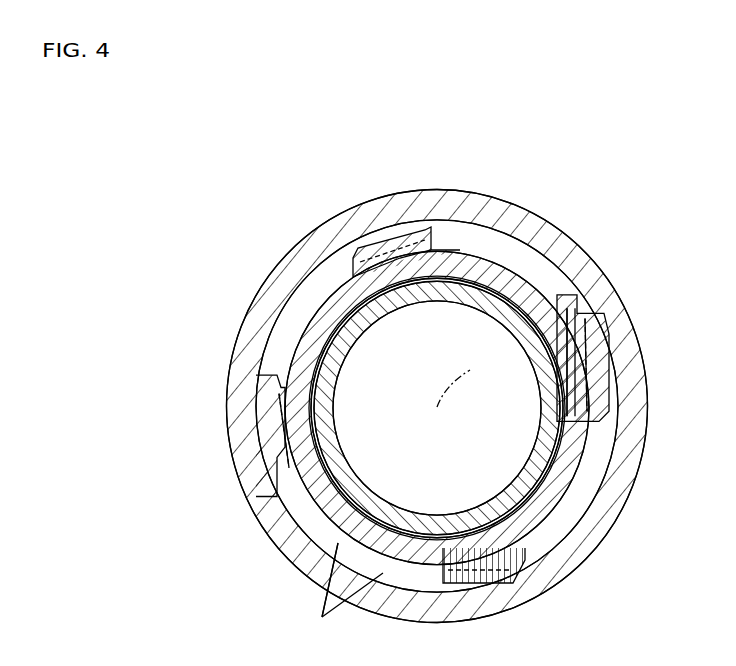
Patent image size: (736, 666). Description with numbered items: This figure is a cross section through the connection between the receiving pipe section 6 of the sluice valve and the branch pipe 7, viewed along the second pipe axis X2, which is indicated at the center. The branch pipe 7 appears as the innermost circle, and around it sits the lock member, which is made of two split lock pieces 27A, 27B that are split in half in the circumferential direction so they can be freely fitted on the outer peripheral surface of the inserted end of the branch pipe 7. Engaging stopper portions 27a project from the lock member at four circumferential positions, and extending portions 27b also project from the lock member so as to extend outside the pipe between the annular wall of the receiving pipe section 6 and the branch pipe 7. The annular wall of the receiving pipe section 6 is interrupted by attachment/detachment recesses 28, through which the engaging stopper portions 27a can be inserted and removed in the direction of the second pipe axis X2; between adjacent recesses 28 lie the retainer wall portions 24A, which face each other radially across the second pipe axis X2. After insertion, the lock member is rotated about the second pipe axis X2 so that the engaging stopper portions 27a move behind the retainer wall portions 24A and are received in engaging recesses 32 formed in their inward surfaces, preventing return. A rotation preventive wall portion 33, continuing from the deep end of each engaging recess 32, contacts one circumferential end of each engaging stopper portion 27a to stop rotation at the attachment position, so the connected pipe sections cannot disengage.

The receiving pipe section 6 is at (230, 362).
The branch pipe 7 is at (430, 515).
The retainer wall portions 24A is at (340, 260).
The engaging stopper portions 27a is at (373, 247).
The extending portions 27b is at (285, 357).
The split lock piece 27A is at (563, 503).
The split lock piece 27B is at (343, 543).
The attachment/detachment recesses 28 is at (230, 360).
The engaging recesses 32 is at (288, 487).
The rotation preventive wall portion 33 is at (305, 400).
The second pipe axis X2 is at (468, 379).